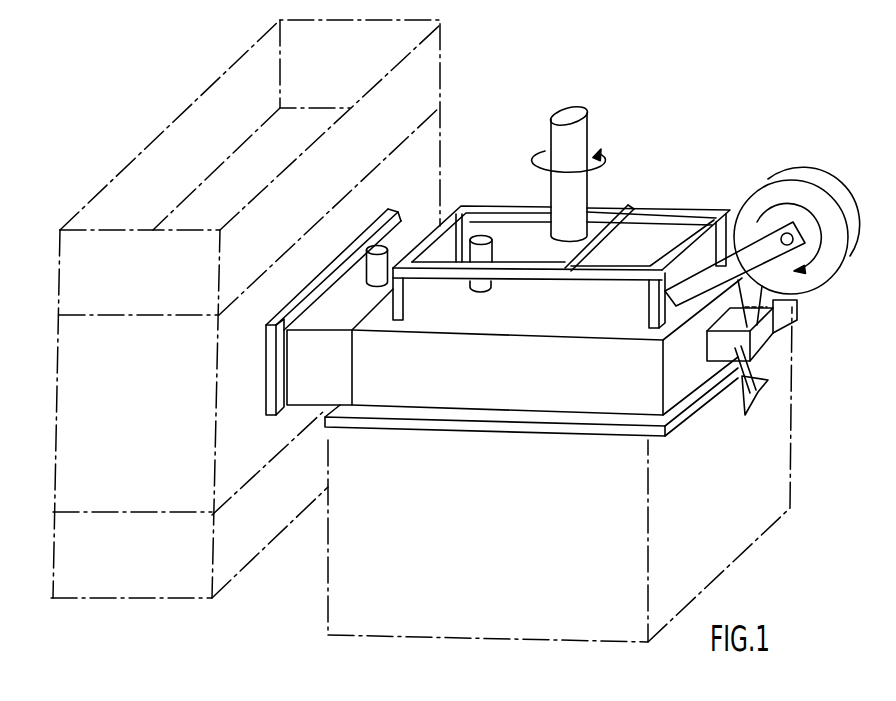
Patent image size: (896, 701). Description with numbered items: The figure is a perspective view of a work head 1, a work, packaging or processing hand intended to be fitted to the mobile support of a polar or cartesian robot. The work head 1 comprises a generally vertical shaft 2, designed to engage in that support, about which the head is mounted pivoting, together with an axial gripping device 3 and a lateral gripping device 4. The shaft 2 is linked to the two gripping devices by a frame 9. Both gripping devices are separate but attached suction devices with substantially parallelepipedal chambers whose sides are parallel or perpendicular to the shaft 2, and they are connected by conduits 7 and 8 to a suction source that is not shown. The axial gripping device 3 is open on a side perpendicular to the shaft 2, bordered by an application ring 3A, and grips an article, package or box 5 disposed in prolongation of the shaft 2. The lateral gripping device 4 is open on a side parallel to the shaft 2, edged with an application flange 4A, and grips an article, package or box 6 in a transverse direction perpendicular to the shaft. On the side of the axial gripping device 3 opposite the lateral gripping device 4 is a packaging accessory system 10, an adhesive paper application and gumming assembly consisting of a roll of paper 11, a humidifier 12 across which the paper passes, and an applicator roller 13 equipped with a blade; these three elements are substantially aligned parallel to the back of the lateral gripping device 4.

The work head 1 is at (653, 190).
The shaft 2 is at (574, 147).
The axial gripping device 3 is at (443, 373).
The application ring 3A is at (697, 420).
The lateral gripping device 4 is at (329, 314).
The application flange 4A is at (265, 382).
The article 5 is at (608, 643).
The article 6 is at (193, 600).
The conduit 7 is at (483, 233).
The conduit 8 is at (382, 246).
The frame 9 is at (593, 284).
The packaging accessory system 10 is at (806, 303).
The roll of paper 11 is at (824, 211).
The humidifier 12 is at (765, 337).
The applicator roller 13 is at (766, 392).